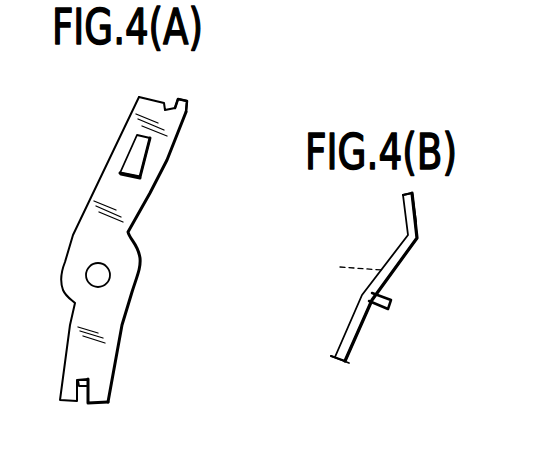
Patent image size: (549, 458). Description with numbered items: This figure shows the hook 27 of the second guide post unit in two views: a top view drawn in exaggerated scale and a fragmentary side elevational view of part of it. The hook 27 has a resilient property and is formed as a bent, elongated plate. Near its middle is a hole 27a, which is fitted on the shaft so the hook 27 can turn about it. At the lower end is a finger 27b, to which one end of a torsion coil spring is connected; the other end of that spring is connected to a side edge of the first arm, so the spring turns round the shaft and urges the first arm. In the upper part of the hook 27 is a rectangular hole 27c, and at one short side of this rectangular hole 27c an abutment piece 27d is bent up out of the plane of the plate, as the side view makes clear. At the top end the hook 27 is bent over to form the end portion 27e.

In FIG. 4A, the hook 27 is at (125, 254).
In FIG. 4B, the hook 27 is at (374, 278).
In FIG. 4A, the hole 27a is at (104, 275).
In FIG. 4A, the finger 27b is at (88, 378).
In FIG. 4A, the rectangular hole 27c is at (131, 160).
In FIG. 4B, the rectangular hole 27c is at (348, 265).
In FIG. 4A, the abutment piece 27d is at (136, 181).
In FIG. 4B, the abutment piece 27d is at (383, 310).
In FIG. 4A, the upper bent end 27e is at (181, 105).
In FIG. 4B, the upper bent end 27e is at (407, 215).